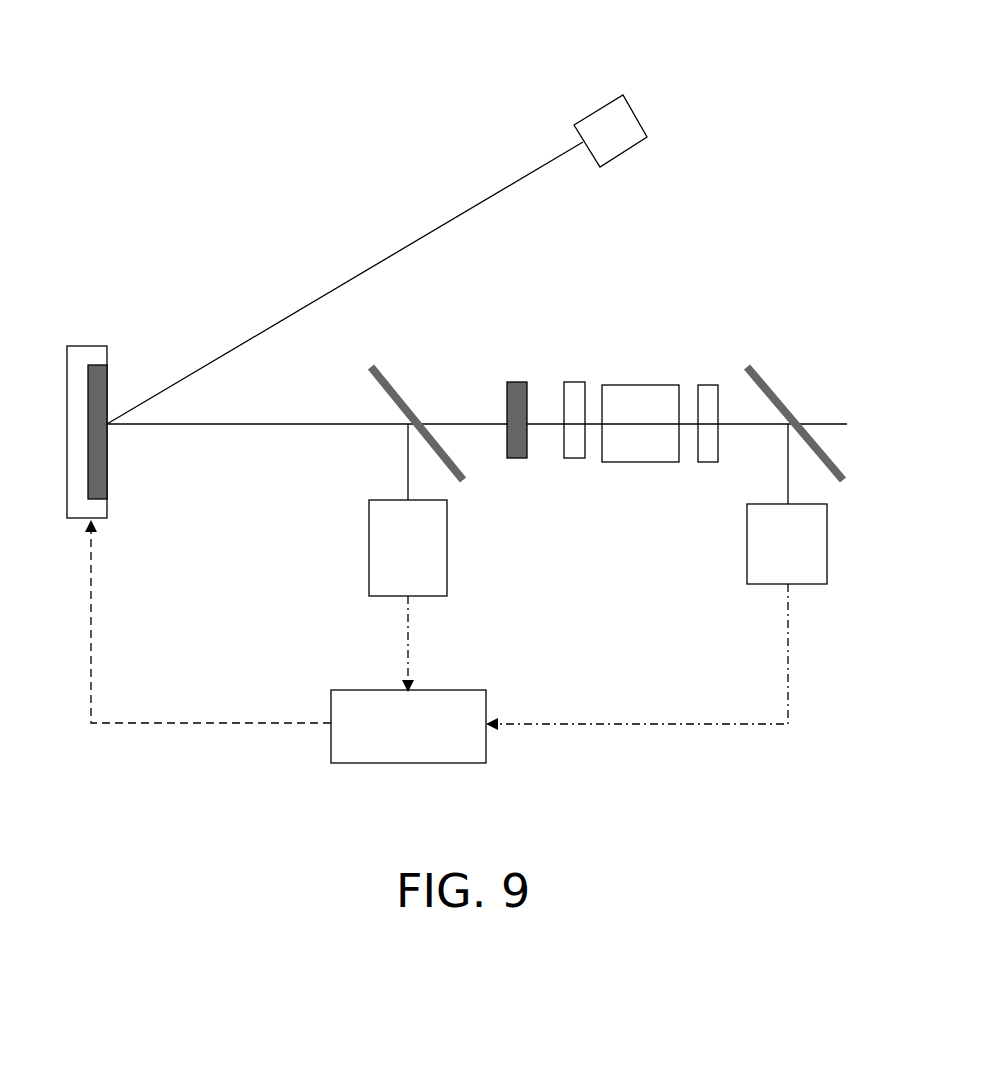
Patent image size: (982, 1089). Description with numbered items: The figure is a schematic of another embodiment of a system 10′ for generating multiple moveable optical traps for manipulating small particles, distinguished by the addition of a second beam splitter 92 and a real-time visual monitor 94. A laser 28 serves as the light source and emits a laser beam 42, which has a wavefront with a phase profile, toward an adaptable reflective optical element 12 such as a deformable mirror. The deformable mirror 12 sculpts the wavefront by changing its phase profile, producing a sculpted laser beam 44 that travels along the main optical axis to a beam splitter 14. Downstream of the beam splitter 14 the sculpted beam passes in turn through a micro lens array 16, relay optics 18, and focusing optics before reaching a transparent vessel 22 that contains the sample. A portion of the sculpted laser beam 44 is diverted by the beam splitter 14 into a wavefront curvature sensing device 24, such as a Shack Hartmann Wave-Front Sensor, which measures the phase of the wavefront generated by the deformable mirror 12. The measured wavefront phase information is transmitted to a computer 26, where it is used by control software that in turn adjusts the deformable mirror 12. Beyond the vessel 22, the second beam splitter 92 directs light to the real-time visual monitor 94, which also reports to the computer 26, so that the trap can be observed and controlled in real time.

The system 10′ is at (267, 58).
The adaptable reflective optical element 12 is at (98, 362).
The beam splitter 14 is at (391, 377).
The micro lens array 16 is at (517, 383).
The relay optics 18 is at (582, 383).
The transparent vessel 22 is at (707, 390).
The wavefront curvature sensing device 24 is at (383, 572).
The computer 26 is at (349, 700).
The laser 28 is at (590, 122).
The laser beam 42 is at (388, 245).
The sculpted laser beam 44 is at (370, 420).
The second beam splitter 92 is at (773, 390).
The real-time visual monitor 94 is at (827, 545).